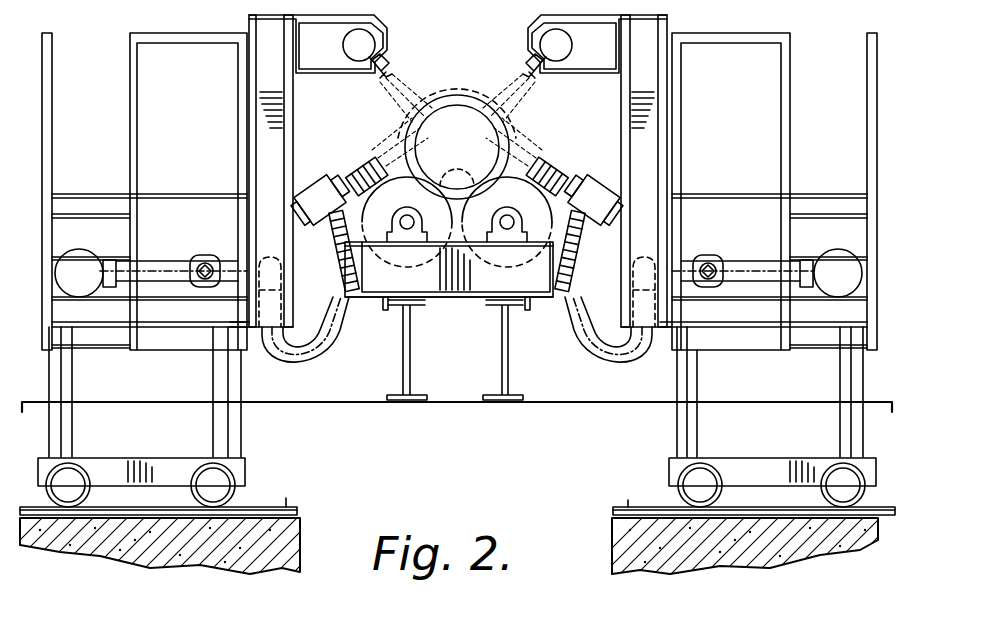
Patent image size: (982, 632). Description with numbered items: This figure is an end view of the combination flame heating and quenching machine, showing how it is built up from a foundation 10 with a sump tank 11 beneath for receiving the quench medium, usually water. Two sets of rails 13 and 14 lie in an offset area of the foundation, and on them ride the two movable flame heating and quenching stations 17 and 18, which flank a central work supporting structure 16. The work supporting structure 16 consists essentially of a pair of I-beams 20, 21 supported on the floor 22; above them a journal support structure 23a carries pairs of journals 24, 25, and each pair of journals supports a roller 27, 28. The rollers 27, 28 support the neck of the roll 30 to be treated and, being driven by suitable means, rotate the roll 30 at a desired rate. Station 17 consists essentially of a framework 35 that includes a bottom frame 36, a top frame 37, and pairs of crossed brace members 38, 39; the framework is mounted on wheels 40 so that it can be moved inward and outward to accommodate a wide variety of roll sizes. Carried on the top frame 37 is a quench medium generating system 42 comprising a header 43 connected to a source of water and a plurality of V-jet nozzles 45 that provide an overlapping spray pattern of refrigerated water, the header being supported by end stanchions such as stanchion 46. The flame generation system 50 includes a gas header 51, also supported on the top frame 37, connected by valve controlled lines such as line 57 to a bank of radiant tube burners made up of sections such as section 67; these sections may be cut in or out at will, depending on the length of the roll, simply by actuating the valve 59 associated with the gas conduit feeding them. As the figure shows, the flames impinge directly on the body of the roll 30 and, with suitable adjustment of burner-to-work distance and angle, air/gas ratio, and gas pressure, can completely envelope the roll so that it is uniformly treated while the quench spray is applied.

The foundation 10 is at (652, 582).
The sump tank 11 is at (612, 567).
The rails 13 is at (278, 497).
The rails 14 is at (632, 500).
The work supporting structure 16 is at (386, 373).
The flame heating and quenching station 17 is at (169, 253).
The flame heating and quenching station 18 is at (830, 62).
The I-beam 20 is at (409, 374).
The I-beam 21 is at (509, 376).
The floor 22 is at (611, 402).
The journal support structure 23a is at (461, 291).
The journal 24 is at (398, 235).
The journal 25 is at (523, 226).
The roller 27 is at (340, 244).
The roller 28 is at (531, 187).
The roll 30 is at (452, 92).
The framework 35 is at (246, 411).
The bottom frame 36 is at (138, 454).
The top frame 37 is at (160, 320).
The crossed brace member 38 is at (73, 390).
The crossed brace member 39 is at (216, 380).
The wheels 40 is at (230, 482).
The quench medium generating system 42 is at (351, 61).
The header 43 is at (357, 36).
The V-jet nozzles 45 is at (378, 78).
The end stanchion 46 is at (263, 18).
The flame generation system 50 is at (358, 201).
The gas header 51 is at (76, 253).
The valve controlled line 57 is at (322, 346).
The valve 59 is at (222, 262).
The burner section 67 is at (322, 183).